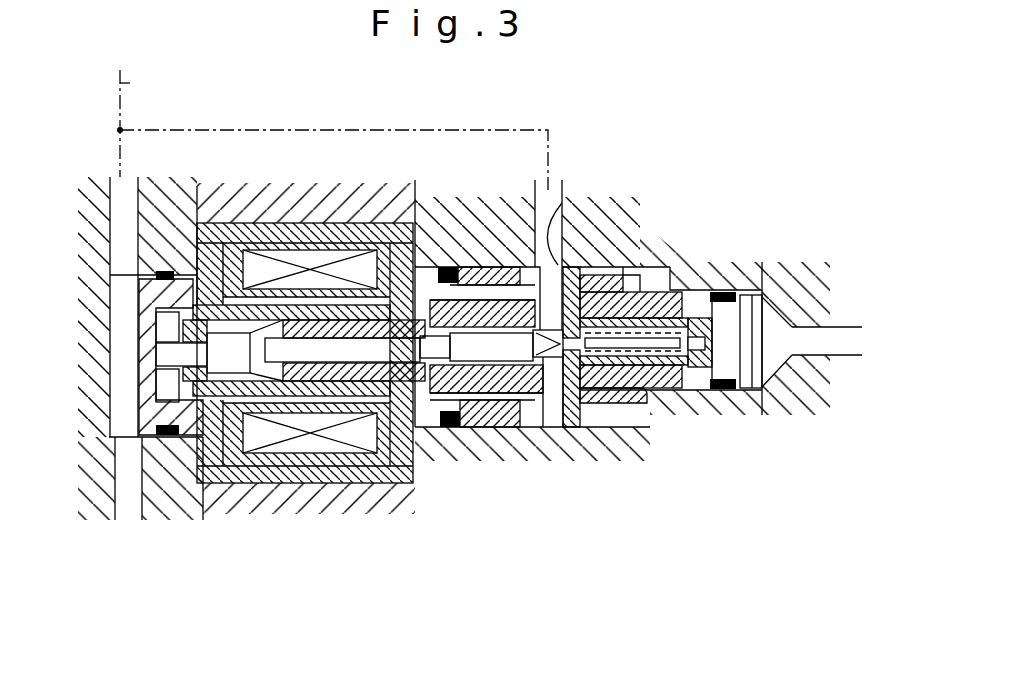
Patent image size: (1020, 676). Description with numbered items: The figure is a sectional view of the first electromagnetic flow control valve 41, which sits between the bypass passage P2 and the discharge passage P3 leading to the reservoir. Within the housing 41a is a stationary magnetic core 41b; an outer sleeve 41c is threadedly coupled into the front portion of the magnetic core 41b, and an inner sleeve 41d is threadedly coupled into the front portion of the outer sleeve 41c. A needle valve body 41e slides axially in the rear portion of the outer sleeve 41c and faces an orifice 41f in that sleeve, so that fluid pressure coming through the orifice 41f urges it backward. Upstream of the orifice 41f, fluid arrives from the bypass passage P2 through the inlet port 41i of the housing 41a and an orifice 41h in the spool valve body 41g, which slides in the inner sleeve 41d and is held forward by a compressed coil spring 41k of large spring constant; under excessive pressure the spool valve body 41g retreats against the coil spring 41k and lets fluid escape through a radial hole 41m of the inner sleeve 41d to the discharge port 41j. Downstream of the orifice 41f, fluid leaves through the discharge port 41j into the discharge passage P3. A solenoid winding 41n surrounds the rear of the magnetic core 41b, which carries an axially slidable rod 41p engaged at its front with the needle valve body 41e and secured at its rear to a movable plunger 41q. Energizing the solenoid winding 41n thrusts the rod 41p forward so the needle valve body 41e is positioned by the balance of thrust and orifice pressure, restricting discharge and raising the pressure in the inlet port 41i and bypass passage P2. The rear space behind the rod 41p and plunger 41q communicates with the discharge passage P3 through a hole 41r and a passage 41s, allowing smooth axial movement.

The electromagnetic flow control valve 41 is at (642, 151).
The housing 41a is at (450, 465).
The stationary magnetic core 41b is at (481, 430).
The outer sleeve 41c is at (575, 432).
The inner sleeve 41d is at (672, 412).
The needle valve body 41e is at (552, 428).
The orifice 41f is at (615, 425).
The spool valve body 41g is at (660, 295).
The orifice 41h is at (745, 290).
The inlet port 41i is at (782, 313).
The discharge port 41j is at (557, 210).
The compressed coil spring 41k is at (602, 265).
The radial hole 41m is at (692, 398).
The solenoid winding 41n is at (320, 440).
The rod 41p is at (407, 462).
The plunger 41q is at (236, 440).
The hole 41r is at (152, 355).
The passage 41s is at (334, 131).
The bypass passage P2 is at (834, 326).
The discharge passage P3 is at (134, 83).